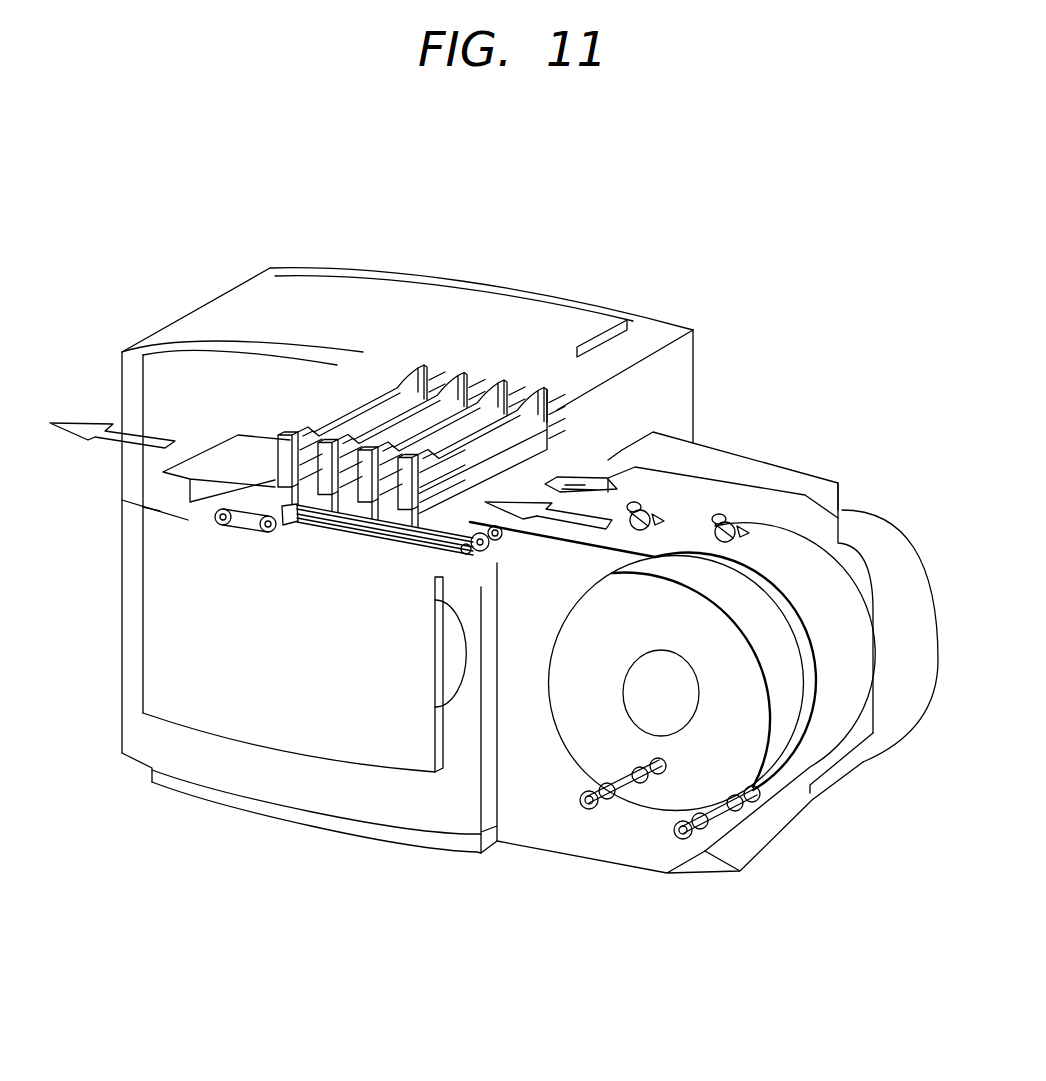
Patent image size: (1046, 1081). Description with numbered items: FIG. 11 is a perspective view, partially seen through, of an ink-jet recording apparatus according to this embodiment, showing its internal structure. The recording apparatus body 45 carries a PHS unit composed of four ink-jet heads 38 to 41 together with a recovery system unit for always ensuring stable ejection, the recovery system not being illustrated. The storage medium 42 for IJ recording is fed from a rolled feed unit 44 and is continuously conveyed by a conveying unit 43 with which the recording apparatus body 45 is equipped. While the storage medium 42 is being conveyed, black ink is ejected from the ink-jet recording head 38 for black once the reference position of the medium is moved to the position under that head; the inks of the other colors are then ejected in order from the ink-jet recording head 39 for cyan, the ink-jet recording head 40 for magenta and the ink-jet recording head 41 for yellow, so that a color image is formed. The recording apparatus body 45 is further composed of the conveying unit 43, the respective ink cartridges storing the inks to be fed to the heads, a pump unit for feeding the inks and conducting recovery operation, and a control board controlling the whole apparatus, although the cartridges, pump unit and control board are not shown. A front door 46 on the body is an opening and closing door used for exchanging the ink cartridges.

The ink-jet recording head for black 38 is at (537, 392).
The ink-jet recording head for cyan 39 is at (497, 378).
The ink-jet recording head for magenta 40 is at (455, 388).
The ink-jet recording head for yellow 41 is at (412, 395).
The storage medium for IJ recording 42 is at (690, 533).
The conveying unit 43 is at (430, 540).
The rolled feed unit 44 is at (866, 532).
The recording apparatus body 45 is at (235, 333).
The front door 46 is at (253, 707).